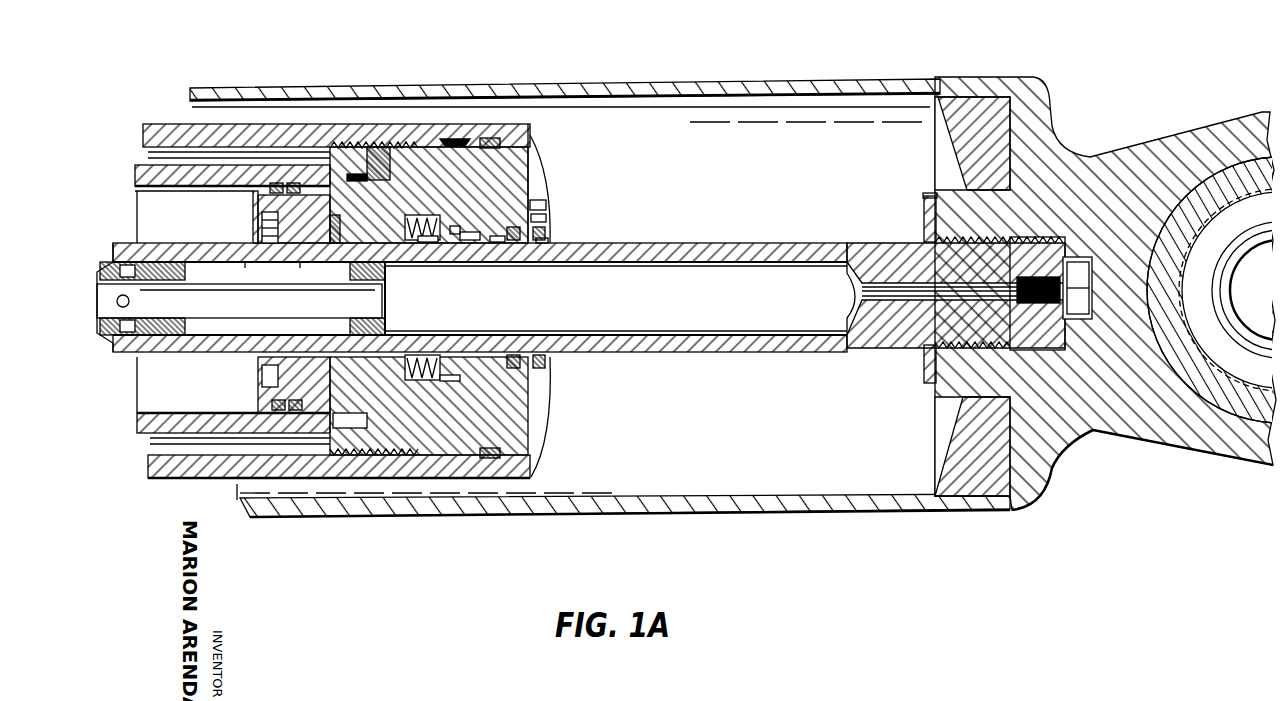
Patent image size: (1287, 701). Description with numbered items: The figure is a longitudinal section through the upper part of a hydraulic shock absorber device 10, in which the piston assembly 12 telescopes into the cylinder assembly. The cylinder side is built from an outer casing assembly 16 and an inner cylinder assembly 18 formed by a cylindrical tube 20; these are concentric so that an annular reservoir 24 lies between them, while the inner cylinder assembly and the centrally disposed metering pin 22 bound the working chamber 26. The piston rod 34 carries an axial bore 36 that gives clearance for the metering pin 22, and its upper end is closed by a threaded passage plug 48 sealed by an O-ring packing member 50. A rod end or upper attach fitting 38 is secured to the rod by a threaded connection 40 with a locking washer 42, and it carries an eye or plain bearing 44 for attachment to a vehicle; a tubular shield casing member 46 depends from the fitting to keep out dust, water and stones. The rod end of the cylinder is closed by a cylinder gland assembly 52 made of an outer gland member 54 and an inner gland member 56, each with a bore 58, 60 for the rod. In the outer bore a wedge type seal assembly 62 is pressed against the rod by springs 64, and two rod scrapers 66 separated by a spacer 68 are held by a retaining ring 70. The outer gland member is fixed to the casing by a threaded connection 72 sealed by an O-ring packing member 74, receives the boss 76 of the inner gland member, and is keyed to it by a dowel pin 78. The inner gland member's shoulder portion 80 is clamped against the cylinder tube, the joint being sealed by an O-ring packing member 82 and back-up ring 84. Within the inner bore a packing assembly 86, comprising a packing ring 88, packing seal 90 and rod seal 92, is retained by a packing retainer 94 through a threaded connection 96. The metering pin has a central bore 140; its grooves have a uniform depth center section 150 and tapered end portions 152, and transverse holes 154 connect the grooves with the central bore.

The hydraulic-type shock absorber device 10 is at (390, 510).
The piston assembly 12 is at (890, 514).
The outer casing assembly 16 is at (257, 143).
The inner cylinder assembly 18 is at (219, 158).
The cylindrical tube 20 is at (136, 172).
The metering pin 22 is at (390, 322).
The annular chamber or reservoir 24 is at (143, 150).
The working chamber 26 is at (147, 225).
The piston rod 34 is at (735, 242).
The axially extending bore 36 is at (746, 262).
The rod end or upper attach fitting 38 is at (1172, 447).
The threaded connection 40 is at (1018, 348).
The locking washer 42 is at (925, 218).
The eye or plain bearing 44 is at (1185, 373).
The shield assembly or tubular casing member 46 is at (666, 87).
The threaded passage plug 48 is at (1089, 268).
The O-ring packing member 50 is at (1056, 307).
The cylinder gland assembly 52 is at (550, 170).
The outer gland member 54 is at (549, 208).
The inner gland member 56 is at (250, 205).
The bore of outer gland member 58 is at (503, 244).
The bore of inner gland member 60 is at (418, 244).
The wedge type seal assembly 62 is at (470, 226).
The springs 64 is at (418, 224).
The rod scrapers 66 is at (478, 228).
The spacer 68 is at (551, 220).
The retaining ring 70 is at (552, 228).
The threaded connection 72 is at (418, 162).
The O-ring packing member 74 is at (480, 140).
The boss 76 is at (352, 241).
The dowel pin 78 is at (378, 143).
The cylindrical shoulder portion 80 is at (338, 165).
The O-ring packing member 82 is at (292, 194).
The back-up ring 84 is at (248, 191).
The packing assembly 86 is at (334, 217).
The packing ring 88 is at (393, 244).
The packing seal 90 is at (352, 258).
The rod seal 92 is at (318, 250).
The packing retainer 94 is at (273, 250).
The threaded connection 96 is at (255, 397).
The central bore 140 is at (318, 282).
The uniform depth center section 150 is at (98, 332).
The tapered end portion 152 is at (178, 272).
The holes 154 is at (131, 300).